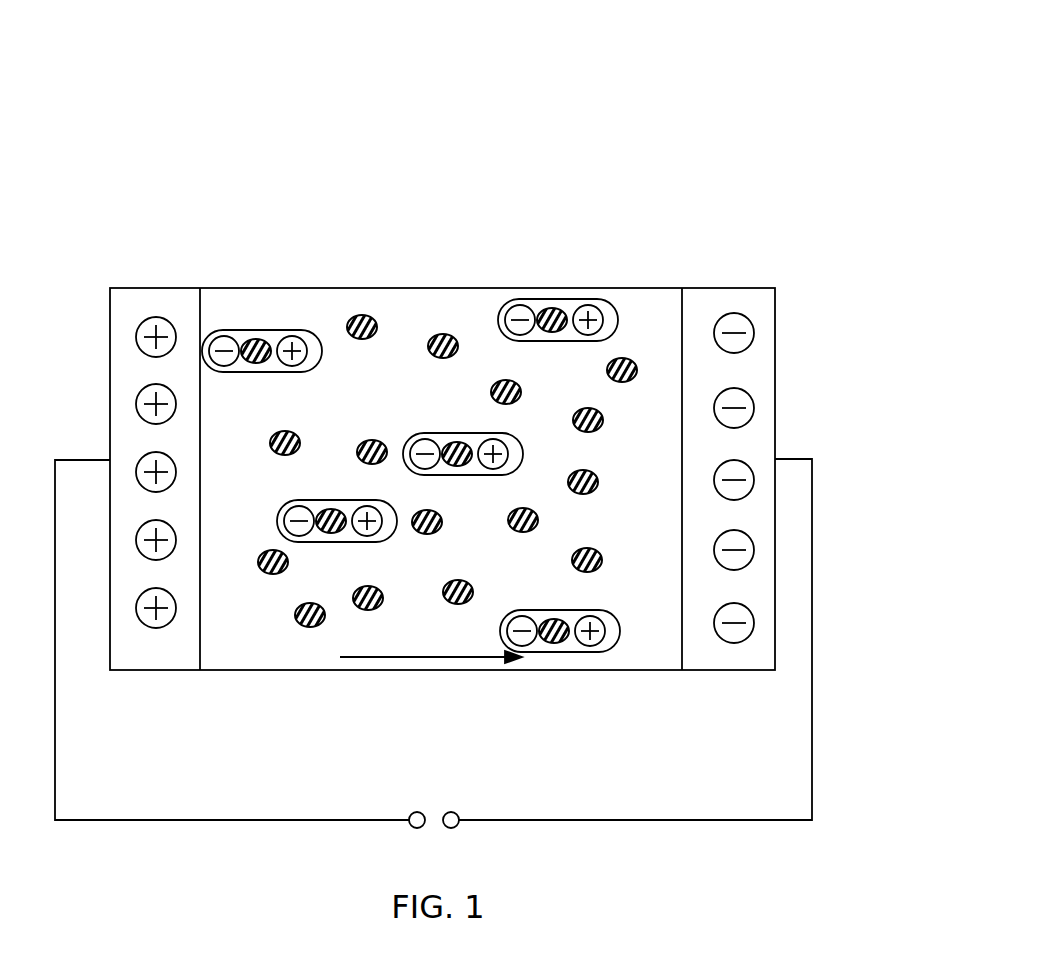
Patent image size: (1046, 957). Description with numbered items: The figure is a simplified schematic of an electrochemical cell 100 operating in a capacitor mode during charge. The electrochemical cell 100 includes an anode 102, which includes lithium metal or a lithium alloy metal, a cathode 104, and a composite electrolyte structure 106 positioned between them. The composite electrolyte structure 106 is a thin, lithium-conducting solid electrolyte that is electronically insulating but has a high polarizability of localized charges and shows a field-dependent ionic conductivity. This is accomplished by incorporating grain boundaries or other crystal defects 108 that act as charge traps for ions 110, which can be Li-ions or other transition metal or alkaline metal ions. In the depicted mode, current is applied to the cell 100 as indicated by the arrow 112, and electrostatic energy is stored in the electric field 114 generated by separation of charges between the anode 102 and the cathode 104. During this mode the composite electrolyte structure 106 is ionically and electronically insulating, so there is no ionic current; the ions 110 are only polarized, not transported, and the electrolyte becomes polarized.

The electrochemical cell 100 is at (590, 72).
The anode 102 is at (148, 288).
The cathode 104 is at (733, 288).
The composite electrolyte structure 106 is at (373, 288).
The crystal defects 108 is at (350, 322).
The ions 110 is at (573, 300).
The arrow 112 is at (845, 481).
The electric field 114 is at (452, 658).